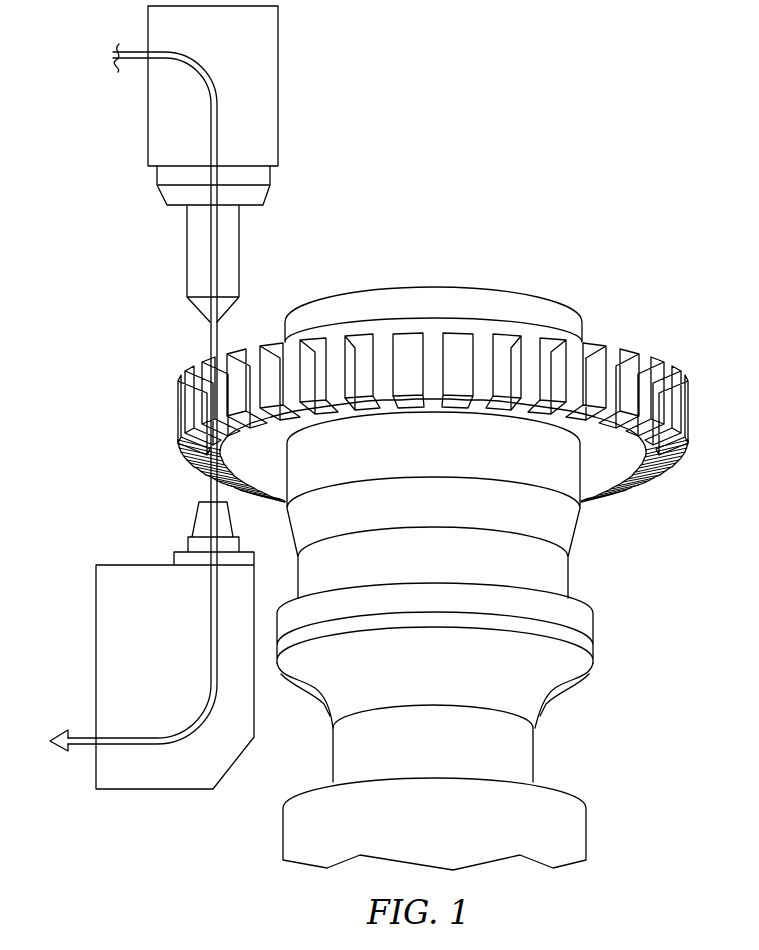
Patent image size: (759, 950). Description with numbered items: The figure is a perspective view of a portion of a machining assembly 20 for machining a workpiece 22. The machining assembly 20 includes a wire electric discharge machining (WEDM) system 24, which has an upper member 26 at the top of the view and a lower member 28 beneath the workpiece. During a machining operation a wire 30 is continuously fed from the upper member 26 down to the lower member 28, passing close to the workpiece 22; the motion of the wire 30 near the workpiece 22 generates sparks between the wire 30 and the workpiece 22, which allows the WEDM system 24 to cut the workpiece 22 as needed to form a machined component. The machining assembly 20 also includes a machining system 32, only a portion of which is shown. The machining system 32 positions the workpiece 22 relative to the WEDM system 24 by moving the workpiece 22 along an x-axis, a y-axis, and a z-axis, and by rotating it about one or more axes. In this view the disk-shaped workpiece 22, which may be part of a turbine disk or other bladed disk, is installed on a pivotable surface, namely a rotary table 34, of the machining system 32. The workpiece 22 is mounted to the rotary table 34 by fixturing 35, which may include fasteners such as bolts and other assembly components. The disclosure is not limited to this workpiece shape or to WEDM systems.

The machining assembly 20 is at (459, 520).
The workpiece 22 is at (608, 461).
The wire electric discharge machining (WEDM) system 24 is at (162, 164).
The upper member 26 is at (170, 103).
The lower member 28 is at (72, 584).
The wire 30 is at (217, 128).
The machining system 32 is at (495, 726).
The rotary table 34 is at (515, 760).
The fixturing 35 is at (580, 625).